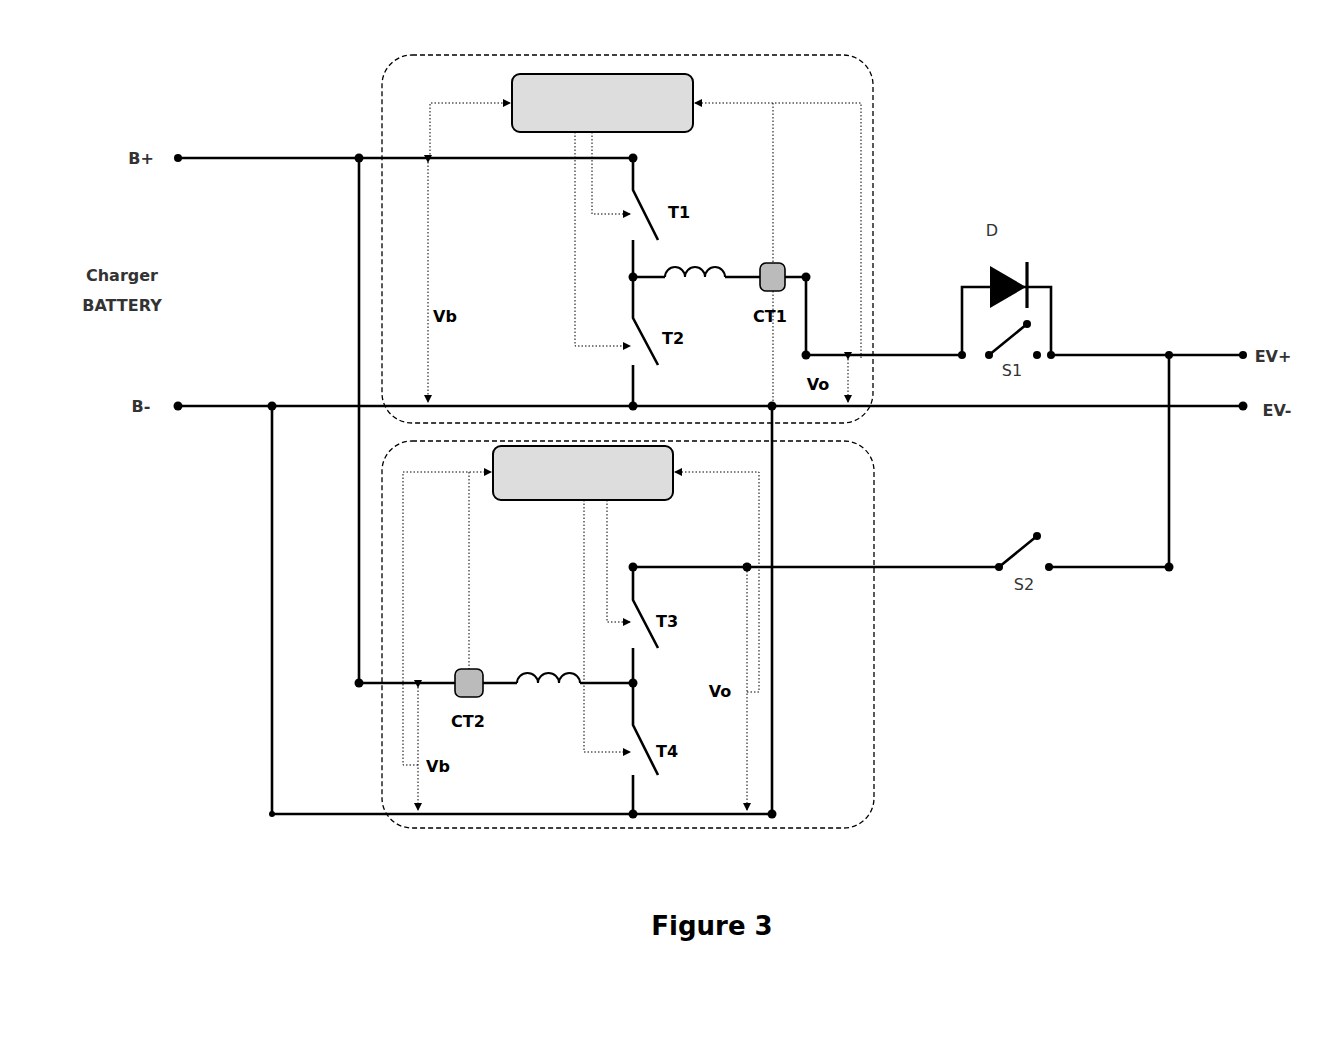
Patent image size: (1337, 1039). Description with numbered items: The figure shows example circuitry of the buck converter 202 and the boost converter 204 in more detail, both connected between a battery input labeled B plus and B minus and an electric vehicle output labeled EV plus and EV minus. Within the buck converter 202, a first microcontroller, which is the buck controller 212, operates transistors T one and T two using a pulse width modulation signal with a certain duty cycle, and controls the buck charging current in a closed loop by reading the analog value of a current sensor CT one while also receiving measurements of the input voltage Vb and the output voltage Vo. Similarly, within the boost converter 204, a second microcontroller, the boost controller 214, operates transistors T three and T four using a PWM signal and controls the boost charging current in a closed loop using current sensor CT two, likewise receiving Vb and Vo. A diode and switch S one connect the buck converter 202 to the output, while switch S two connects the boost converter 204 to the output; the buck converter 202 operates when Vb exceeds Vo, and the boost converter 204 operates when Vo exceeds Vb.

The buck converter 202 is at (852, 57).
The boost converter 204 is at (874, 778).
The buck controller 212 is at (655, 74).
The boost controller 214 is at (655, 500).